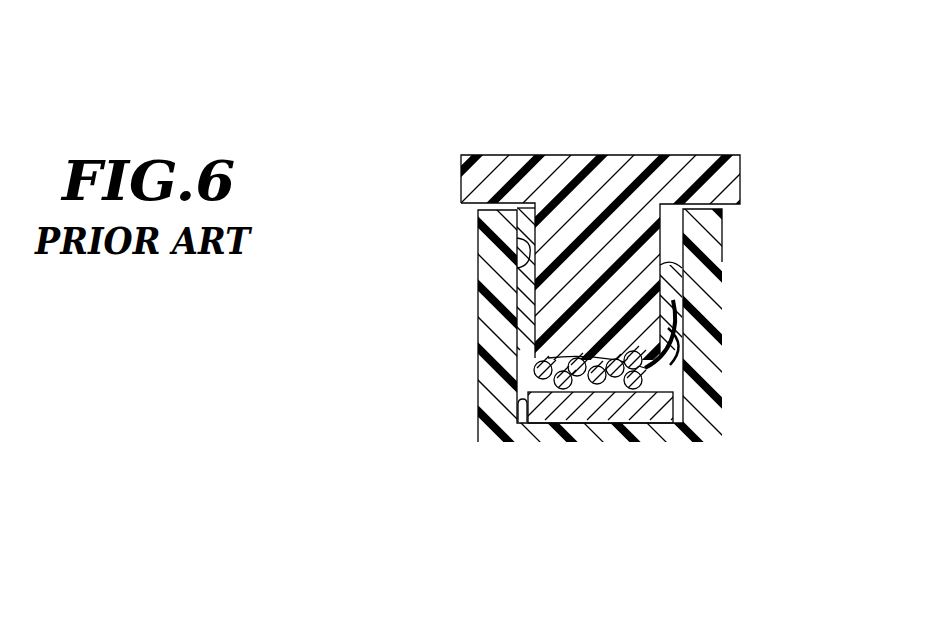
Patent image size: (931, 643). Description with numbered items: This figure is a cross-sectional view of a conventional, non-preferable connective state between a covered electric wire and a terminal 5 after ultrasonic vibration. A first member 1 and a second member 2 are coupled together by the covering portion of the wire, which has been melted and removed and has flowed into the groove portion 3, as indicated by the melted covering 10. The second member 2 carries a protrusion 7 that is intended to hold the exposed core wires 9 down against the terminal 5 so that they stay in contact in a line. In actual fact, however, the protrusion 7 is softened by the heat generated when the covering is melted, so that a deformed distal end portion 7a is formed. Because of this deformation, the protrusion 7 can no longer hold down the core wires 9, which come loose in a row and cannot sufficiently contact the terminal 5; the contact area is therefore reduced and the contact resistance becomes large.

The first member 1 is at (673, 436).
The second member 2 is at (597, 180).
The groove portion 3 is at (527, 264).
The terminal 5 is at (615, 426).
The protrusion 7 is at (645, 257).
The distal end portion 7a is at (680, 375).
The core wire 9 is at (562, 434).
The melted and removed covering portion 10 is at (690, 316).